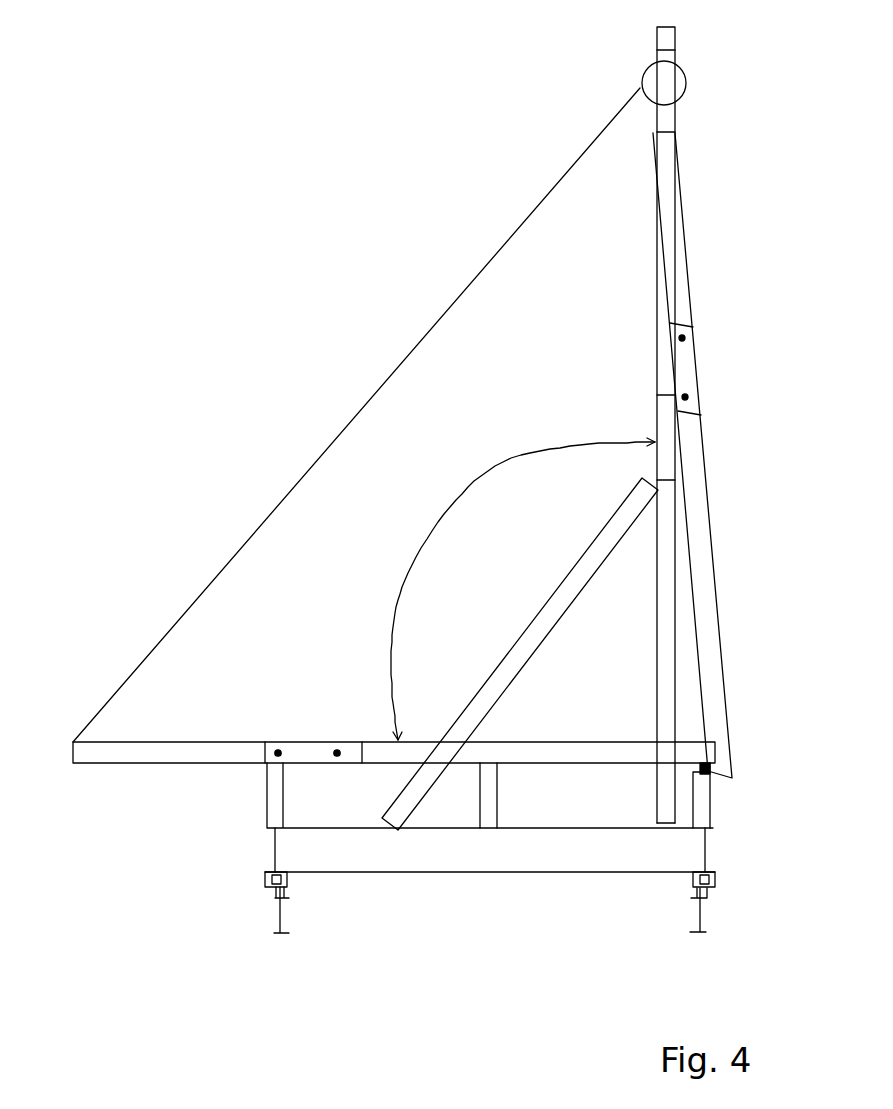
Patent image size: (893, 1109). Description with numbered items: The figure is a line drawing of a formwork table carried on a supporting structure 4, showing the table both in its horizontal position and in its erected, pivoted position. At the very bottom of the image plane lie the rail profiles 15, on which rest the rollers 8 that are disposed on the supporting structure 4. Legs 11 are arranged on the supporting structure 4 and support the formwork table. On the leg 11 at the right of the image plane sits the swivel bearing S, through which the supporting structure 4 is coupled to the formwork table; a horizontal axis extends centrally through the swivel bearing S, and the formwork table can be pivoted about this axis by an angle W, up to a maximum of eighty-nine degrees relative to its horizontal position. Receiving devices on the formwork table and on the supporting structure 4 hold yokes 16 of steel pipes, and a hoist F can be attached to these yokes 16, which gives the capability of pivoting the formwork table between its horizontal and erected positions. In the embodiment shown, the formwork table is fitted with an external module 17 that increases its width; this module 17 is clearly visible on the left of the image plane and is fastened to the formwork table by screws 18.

The hoist F is at (599, 128).
The yoke 16 is at (627, 512).
The pivot angle W is at (450, 508).
The screws 18 is at (337, 750).
The external module 17 is at (138, 750).
The leg 11 is at (277, 790).
The swivel bearing S is at (708, 772).
The supporting structure 4 is at (450, 860).
The rollers 8 is at (272, 892).
The rail profile 15 is at (282, 918).